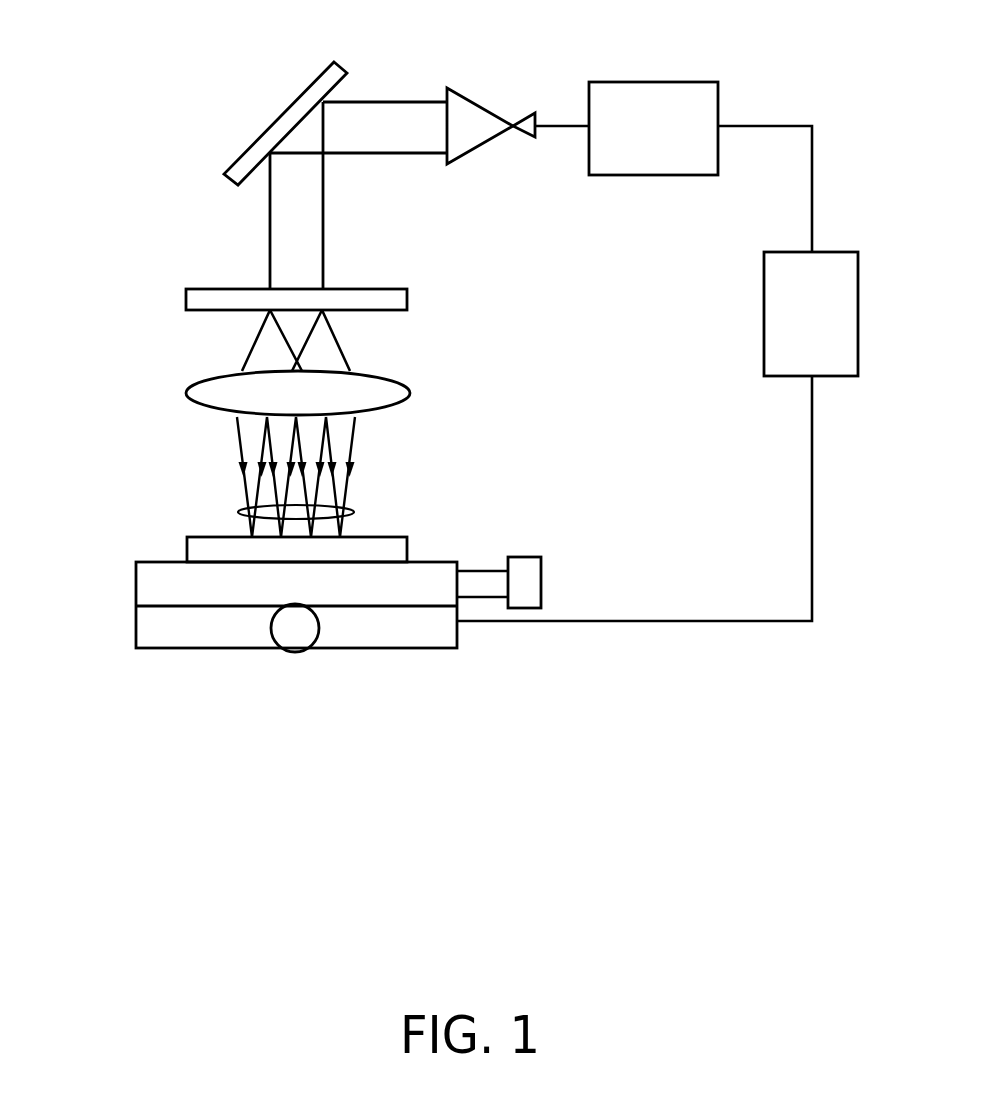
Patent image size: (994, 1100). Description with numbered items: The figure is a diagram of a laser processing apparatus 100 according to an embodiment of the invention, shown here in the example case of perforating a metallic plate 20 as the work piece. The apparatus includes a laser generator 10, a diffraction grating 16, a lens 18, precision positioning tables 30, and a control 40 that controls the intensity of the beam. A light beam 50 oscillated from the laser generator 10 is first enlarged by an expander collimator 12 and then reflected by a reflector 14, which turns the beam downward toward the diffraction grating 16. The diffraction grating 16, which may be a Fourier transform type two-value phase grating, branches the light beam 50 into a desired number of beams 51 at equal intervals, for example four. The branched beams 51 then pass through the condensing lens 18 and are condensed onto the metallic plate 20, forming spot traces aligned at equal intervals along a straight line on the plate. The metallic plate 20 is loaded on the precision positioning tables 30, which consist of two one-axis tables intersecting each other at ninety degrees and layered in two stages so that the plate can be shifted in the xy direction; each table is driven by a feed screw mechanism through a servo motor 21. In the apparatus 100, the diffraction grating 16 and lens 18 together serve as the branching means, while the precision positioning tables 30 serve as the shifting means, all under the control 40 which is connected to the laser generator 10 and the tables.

The laser generator 10 is at (657, 90).
The expander collimator 12 is at (473, 152).
The reflector 14 is at (240, 158).
The diffraction grating 16 is at (403, 299).
The lens 18 is at (397, 392).
The metallic plate 20 is at (397, 547).
The servo motor 21 is at (530, 575).
The precision positioning tables 30 is at (106, 608).
The control 40 is at (842, 318).
The light beam 50 is at (402, 102).
The beams 51 is at (352, 506).
The laser processing apparatus 100 is at (298, 755).